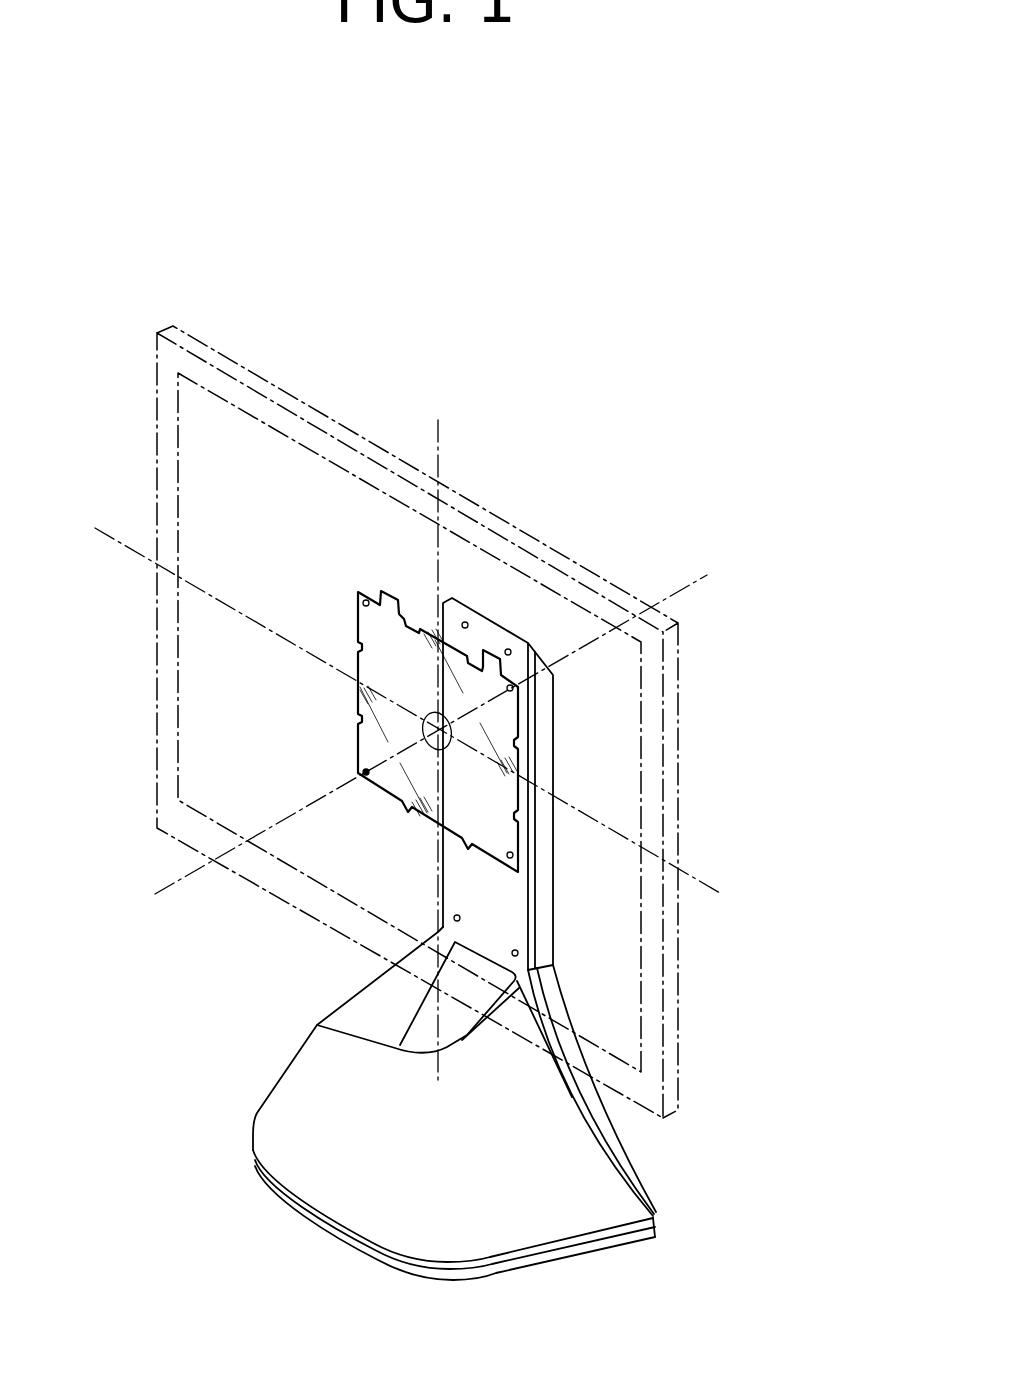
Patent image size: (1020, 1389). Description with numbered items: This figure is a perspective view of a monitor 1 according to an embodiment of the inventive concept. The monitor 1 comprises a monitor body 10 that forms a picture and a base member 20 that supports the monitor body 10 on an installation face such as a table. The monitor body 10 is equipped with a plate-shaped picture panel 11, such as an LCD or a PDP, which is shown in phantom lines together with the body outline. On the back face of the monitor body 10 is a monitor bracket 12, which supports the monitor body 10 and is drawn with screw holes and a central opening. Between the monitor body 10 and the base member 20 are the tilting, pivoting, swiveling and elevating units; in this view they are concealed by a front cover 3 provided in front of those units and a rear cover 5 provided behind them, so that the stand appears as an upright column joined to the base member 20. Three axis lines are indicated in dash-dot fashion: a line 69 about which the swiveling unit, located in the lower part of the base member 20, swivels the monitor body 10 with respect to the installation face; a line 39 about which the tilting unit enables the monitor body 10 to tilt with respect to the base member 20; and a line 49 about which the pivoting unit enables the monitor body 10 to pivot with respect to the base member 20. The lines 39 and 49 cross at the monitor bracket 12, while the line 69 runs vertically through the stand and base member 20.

The monitor 1 is at (595, 510).
The front cover 3 is at (513, 902).
The rear cover 5 is at (550, 832).
The monitor body 10 is at (680, 648).
The picture panel 11 is at (618, 718).
The monitor bracket 12 is at (518, 752).
The base member 20 is at (570, 1260).
The line 39 is at (118, 540).
The line 49 is at (166, 892).
The line 69 is at (441, 438).